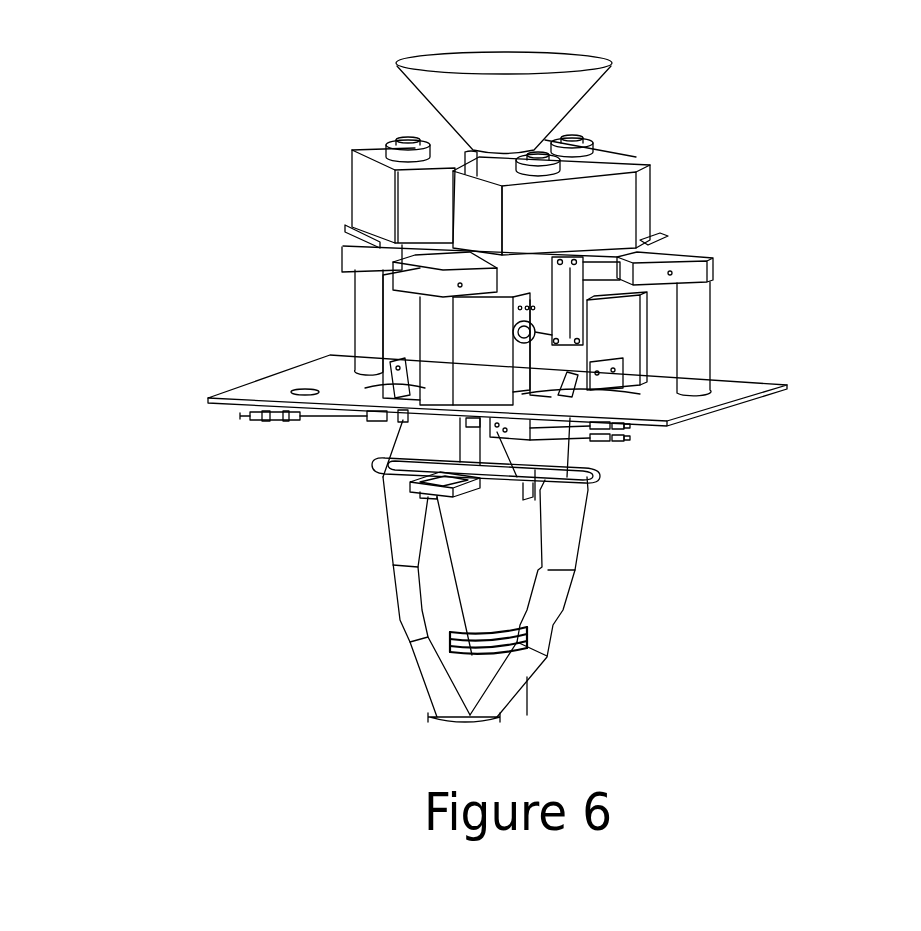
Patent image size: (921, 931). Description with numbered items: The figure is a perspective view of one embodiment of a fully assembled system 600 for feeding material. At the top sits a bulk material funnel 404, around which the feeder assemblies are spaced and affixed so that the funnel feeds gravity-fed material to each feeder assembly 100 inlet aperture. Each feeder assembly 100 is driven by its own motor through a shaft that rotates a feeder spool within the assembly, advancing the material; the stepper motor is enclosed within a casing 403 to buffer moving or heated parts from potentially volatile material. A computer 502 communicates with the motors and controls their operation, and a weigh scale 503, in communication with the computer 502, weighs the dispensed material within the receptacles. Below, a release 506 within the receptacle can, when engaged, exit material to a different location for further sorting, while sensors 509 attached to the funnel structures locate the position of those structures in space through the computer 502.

The fully assembled system 600 is at (173, 52).
The bulk material funnel 404 is at (557, 104).
The weigh scale 503 is at (612, 207).
The computer 502 is at (767, 205).
The feeder assembly 100 is at (553, 327).
The casing 403 is at (627, 343).
The release 506 is at (377, 363).
The sensors 509 is at (622, 448).